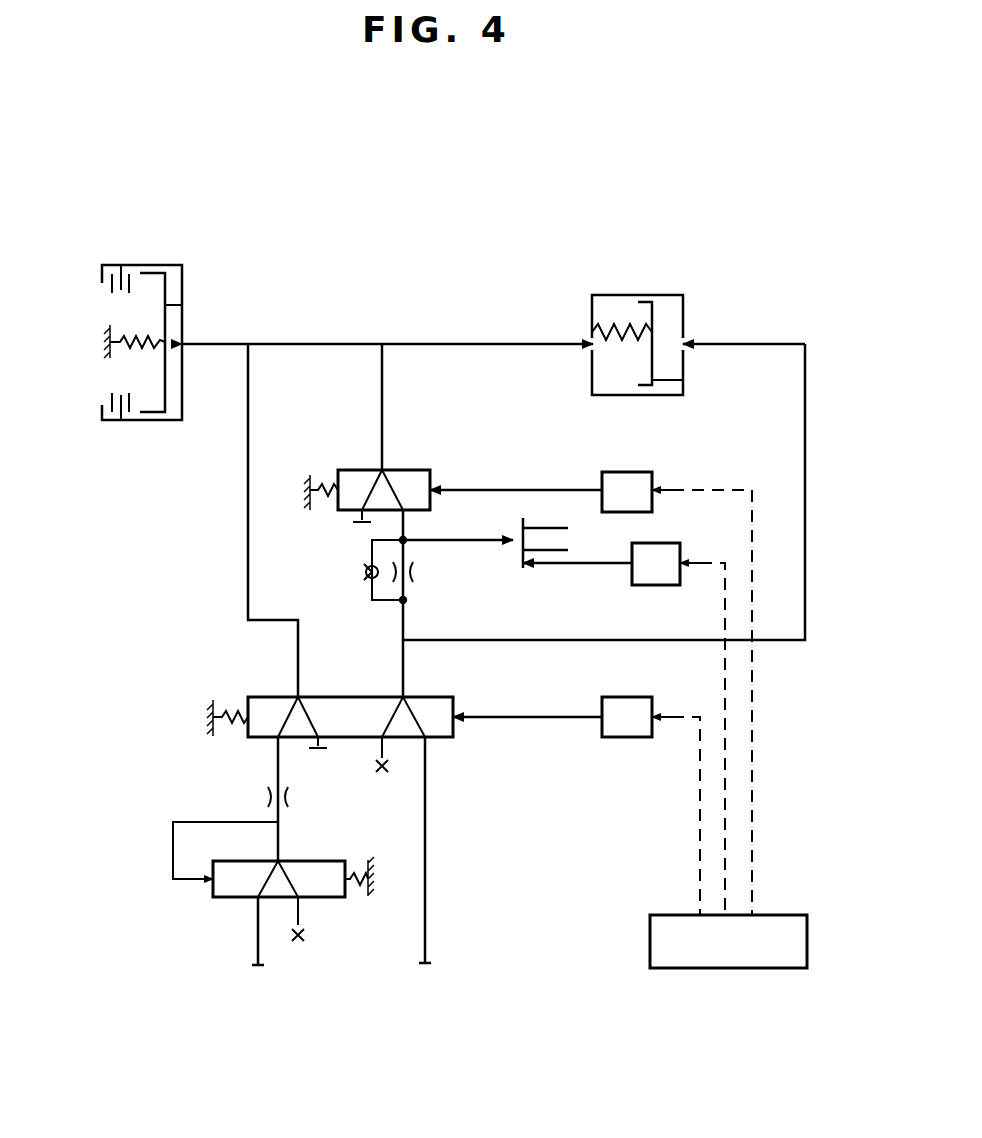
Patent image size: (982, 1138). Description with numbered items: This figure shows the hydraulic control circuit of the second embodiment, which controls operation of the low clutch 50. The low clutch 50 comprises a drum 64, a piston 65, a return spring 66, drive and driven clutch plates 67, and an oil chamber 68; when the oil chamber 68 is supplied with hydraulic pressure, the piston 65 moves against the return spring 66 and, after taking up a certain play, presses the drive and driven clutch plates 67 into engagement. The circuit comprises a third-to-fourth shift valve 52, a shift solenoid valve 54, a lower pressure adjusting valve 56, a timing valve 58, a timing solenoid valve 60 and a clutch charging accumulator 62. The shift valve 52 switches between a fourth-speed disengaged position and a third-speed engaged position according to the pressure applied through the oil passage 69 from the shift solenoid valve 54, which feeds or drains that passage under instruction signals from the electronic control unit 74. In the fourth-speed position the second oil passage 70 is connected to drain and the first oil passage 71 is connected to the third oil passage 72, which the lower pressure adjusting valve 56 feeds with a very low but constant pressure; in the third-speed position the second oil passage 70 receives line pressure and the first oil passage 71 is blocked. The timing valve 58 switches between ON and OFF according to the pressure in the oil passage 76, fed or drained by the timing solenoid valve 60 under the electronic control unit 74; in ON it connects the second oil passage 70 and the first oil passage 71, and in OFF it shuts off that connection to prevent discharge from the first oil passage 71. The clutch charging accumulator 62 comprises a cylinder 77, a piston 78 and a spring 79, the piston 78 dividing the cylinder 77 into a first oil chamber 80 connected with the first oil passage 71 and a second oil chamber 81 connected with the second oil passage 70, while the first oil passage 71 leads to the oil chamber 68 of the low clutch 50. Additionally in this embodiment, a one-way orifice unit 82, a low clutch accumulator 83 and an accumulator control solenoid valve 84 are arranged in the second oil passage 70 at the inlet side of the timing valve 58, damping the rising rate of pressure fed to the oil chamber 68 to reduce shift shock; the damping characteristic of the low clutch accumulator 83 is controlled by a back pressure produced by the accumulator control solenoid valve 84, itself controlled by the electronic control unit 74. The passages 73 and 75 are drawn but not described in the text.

The low clutch 50 is at (154, 344).
The 3-4 shift valve 52 is at (458, 695).
The shift solenoid valve 54 is at (636, 695).
The lower pressure adjusting valve 56 is at (322, 858).
The timing valve 58 is at (416, 468).
The timing solenoid valve 60 is at (642, 468).
The clutch charging accumulator 62 is at (639, 298).
The drum 64 is at (172, 421).
The piston 65 is at (165, 305).
The return spring 66 is at (130, 345).
The drive and driven clutch plates 67 is at (100, 288).
The oil chamber 68 is at (174, 390).
The oil passage 69 is at (565, 717).
The second oil passage 70 is at (438, 603).
The first oil passage 71 is at (425, 344).
The third oil passage 72 is at (278, 766).
The line 73 is at (425, 803).
The electronic control unit 74 is at (783, 915).
The line 75 is at (258, 925).
The oil passage 76 is at (535, 490).
The cylinder 77 is at (624, 297).
The piston 78 is at (683, 380).
The spring 79 is at (602, 345).
The first oil chamber 80 is at (602, 300).
The second oil chamber 81 is at (672, 312).
The one-way orifice unit 82 is at (420, 574).
The low clutch accumulator 83 is at (516, 565).
The accumulator control solenoid valve 84 is at (632, 572).